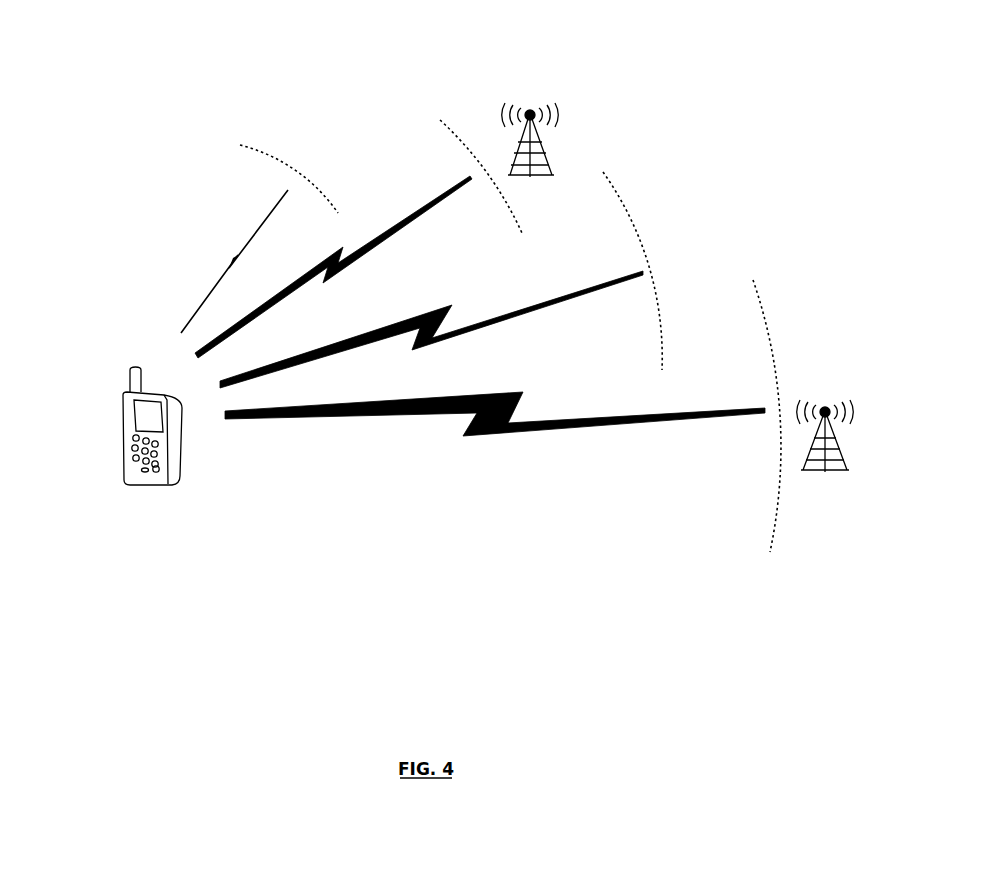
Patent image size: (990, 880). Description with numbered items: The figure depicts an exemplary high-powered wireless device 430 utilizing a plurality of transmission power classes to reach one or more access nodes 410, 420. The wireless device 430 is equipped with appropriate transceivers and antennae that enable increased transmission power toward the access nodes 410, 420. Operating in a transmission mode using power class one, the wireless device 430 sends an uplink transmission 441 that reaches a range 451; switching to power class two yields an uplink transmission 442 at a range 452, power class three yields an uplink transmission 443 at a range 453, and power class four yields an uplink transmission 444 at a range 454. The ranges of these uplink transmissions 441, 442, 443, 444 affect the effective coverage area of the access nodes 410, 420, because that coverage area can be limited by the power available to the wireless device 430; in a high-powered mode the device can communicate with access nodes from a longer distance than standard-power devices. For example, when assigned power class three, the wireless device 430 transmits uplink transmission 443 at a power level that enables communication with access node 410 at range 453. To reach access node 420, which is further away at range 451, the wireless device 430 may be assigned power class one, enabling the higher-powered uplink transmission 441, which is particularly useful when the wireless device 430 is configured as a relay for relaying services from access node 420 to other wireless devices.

The access node 410 is at (537, 152).
The access node 420 is at (840, 450).
The high-powered wireless device 430 is at (123, 418).
The uplink transmission 441 is at (633, 416).
The uplink transmission 442 is at (528, 309).
The uplink transmission 443 is at (437, 200).
The uplink transmission 444 is at (229, 265).
The range 451 is at (758, 298).
The range 452 is at (607, 175).
The range 453 is at (441, 119).
The range 454 is at (250, 146).